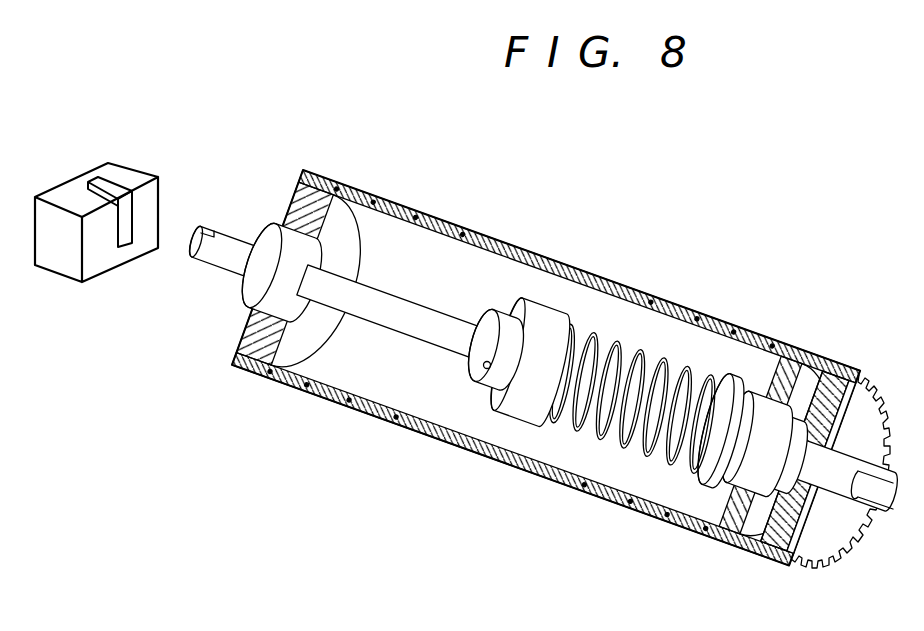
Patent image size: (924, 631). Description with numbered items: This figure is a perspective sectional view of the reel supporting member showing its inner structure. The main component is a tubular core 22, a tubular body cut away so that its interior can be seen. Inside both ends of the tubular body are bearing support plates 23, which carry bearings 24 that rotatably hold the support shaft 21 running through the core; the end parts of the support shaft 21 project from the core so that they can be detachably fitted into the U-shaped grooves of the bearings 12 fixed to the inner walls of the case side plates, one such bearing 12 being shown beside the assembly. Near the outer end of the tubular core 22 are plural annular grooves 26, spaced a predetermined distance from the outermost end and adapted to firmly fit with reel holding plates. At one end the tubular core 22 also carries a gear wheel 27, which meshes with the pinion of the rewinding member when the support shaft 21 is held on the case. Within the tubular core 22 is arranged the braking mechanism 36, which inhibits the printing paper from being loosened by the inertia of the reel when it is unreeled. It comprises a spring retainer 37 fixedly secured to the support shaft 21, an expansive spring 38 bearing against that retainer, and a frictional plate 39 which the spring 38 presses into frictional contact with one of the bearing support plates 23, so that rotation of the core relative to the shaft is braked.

The bearing 12 is at (58, 264).
The support shaft 21 is at (204, 236).
The tubular core 22 is at (470, 447).
The bearing support plate 23 is at (258, 317).
The bearing 24 is at (257, 262).
The annular groove 26 is at (467, 232).
The gear wheel 27 is at (808, 546).
The braking mechanism 36 is at (657, 353).
The spring retainer 37 is at (538, 322).
The expansive spring 38 is at (708, 360).
The frictional plate 39 is at (748, 394).